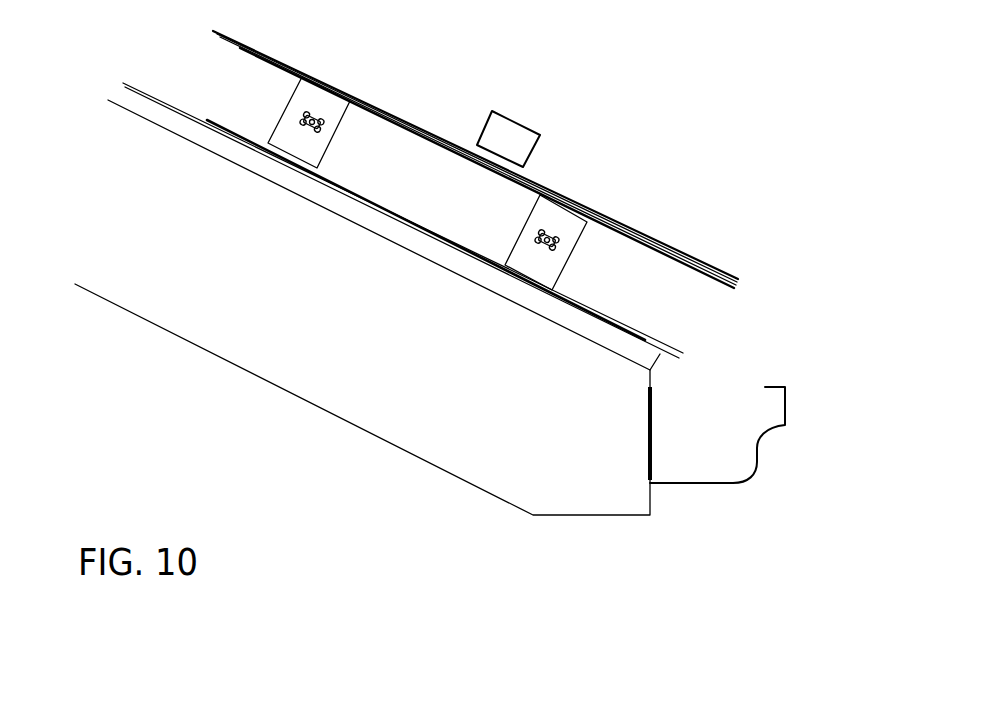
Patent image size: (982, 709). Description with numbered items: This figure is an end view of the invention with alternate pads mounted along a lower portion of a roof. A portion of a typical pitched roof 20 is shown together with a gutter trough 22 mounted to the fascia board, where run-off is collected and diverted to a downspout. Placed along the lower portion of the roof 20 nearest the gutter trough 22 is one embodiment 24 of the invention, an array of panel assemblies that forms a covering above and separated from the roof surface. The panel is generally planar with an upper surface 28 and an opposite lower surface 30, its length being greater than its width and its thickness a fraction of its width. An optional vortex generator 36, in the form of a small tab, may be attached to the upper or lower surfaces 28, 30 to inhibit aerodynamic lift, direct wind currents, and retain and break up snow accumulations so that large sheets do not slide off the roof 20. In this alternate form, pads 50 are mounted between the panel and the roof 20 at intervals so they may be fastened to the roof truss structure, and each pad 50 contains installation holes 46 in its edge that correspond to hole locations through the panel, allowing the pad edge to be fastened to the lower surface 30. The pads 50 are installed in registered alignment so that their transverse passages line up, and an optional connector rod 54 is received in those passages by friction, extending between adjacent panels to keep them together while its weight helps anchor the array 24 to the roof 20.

The pitched roof 20 is at (642, 336).
The gutter trough 22 is at (723, 376).
The embodiment of the invention (panel array) 24 is at (502, 160).
The upper surface 28 is at (468, 159).
The lower surface 30 is at (263, 58).
The vortex generator 36 is at (513, 137).
The installation hole 46 is at (320, 127).
The pad 50 is at (305, 145).
The connector rod 54 is at (318, 130).